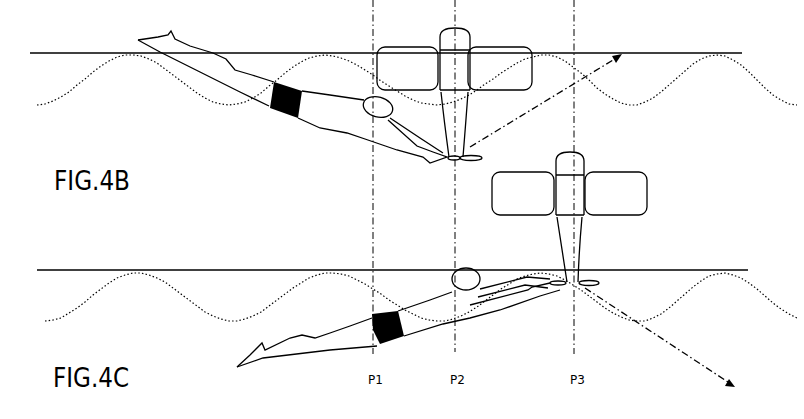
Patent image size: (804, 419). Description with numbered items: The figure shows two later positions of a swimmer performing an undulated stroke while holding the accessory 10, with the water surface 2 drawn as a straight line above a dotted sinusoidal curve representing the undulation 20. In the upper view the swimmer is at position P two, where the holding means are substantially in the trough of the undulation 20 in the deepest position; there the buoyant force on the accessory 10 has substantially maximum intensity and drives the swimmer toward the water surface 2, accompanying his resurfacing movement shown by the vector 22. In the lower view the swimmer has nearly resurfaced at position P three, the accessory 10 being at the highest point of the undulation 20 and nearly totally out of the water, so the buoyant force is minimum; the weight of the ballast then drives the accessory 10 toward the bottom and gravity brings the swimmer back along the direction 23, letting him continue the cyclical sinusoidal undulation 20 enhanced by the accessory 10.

In FIG. 4B, the water surface 2 is at (746, 9).
In FIG. 4C, the water surface 2 is at (715, 262).
In FIG. 4C, the accessory 10 is at (653, 186).
In FIG. 4B, the undulation 20 is at (682, 78).
In FIG. 4C, the undulation 20 is at (780, 297).
In FIG. 4B, the resurfacing movement vector 22 is at (595, 71).
In FIG. 4C, the return direction 23 is at (700, 362).